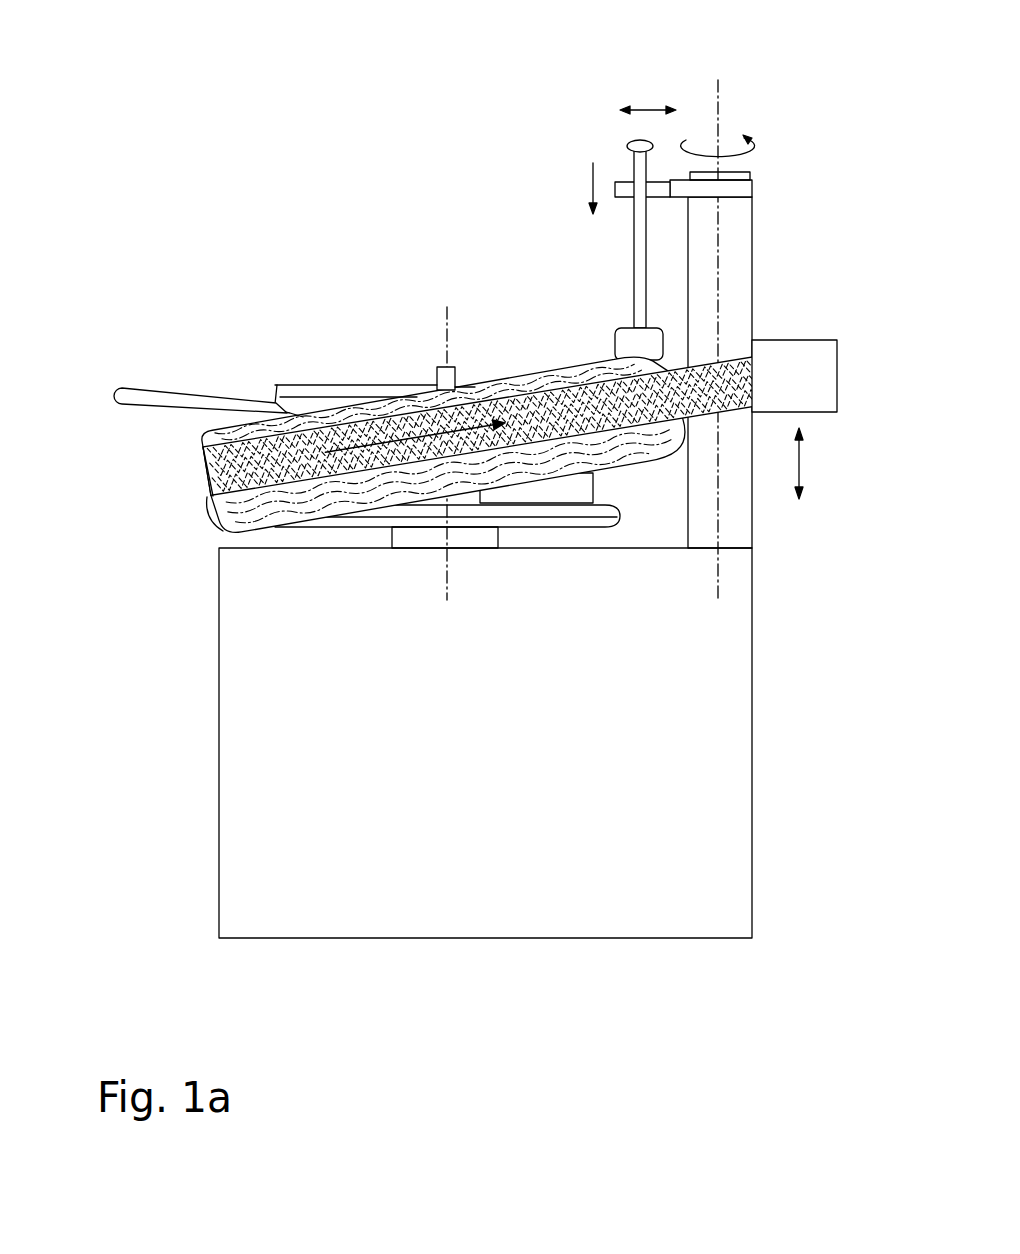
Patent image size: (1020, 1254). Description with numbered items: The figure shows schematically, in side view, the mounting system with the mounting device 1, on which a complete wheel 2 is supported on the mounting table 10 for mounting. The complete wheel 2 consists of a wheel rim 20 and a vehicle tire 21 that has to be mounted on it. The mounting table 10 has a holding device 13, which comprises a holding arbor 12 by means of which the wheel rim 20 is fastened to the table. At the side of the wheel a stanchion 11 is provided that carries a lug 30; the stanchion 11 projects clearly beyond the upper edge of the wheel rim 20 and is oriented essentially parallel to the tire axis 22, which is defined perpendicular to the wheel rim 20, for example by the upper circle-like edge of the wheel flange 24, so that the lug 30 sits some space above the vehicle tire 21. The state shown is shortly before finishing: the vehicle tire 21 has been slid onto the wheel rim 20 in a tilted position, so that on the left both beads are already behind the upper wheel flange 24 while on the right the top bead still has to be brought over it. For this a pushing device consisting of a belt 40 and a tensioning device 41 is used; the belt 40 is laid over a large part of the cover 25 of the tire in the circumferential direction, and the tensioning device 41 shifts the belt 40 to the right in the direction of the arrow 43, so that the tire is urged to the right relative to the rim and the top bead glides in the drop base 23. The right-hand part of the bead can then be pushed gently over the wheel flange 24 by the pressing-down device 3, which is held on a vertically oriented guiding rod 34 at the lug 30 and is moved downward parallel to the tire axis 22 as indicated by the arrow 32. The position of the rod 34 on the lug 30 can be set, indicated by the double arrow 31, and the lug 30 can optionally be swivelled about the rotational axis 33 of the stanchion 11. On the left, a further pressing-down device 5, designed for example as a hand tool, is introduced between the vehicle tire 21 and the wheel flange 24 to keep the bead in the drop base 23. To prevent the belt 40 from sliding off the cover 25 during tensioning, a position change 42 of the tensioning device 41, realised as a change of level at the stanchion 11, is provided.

The mounting device 1 is at (452, 200).
The complete wheel 2 is at (344, 352).
The pressing-down device 3 is at (622, 345).
The pressing-down device 5 is at (142, 400).
The mounting table 10 is at (377, 547).
The stanchion 11 is at (737, 278).
The holding arbor 12 is at (440, 367).
The holding device 13 is at (473, 542).
The wheel rim 20 is at (313, 413).
The vehicle tire 21 is at (218, 520).
The tire axis 22 is at (445, 308).
The drop base 23 is at (604, 480).
The wheel flange 24 is at (275, 386).
The cover of the tire 25 is at (213, 507).
The lug 30 is at (657, 188).
The double arrow 31 is at (652, 108).
The arrow 32 is at (590, 179).
The rotational axis 33 is at (718, 222).
The guiding rod 34 is at (637, 267).
The belt 40 is at (203, 467).
The tensioning device 41 is at (810, 353).
The position change 42 is at (803, 463).
The arrow 43 is at (470, 432).